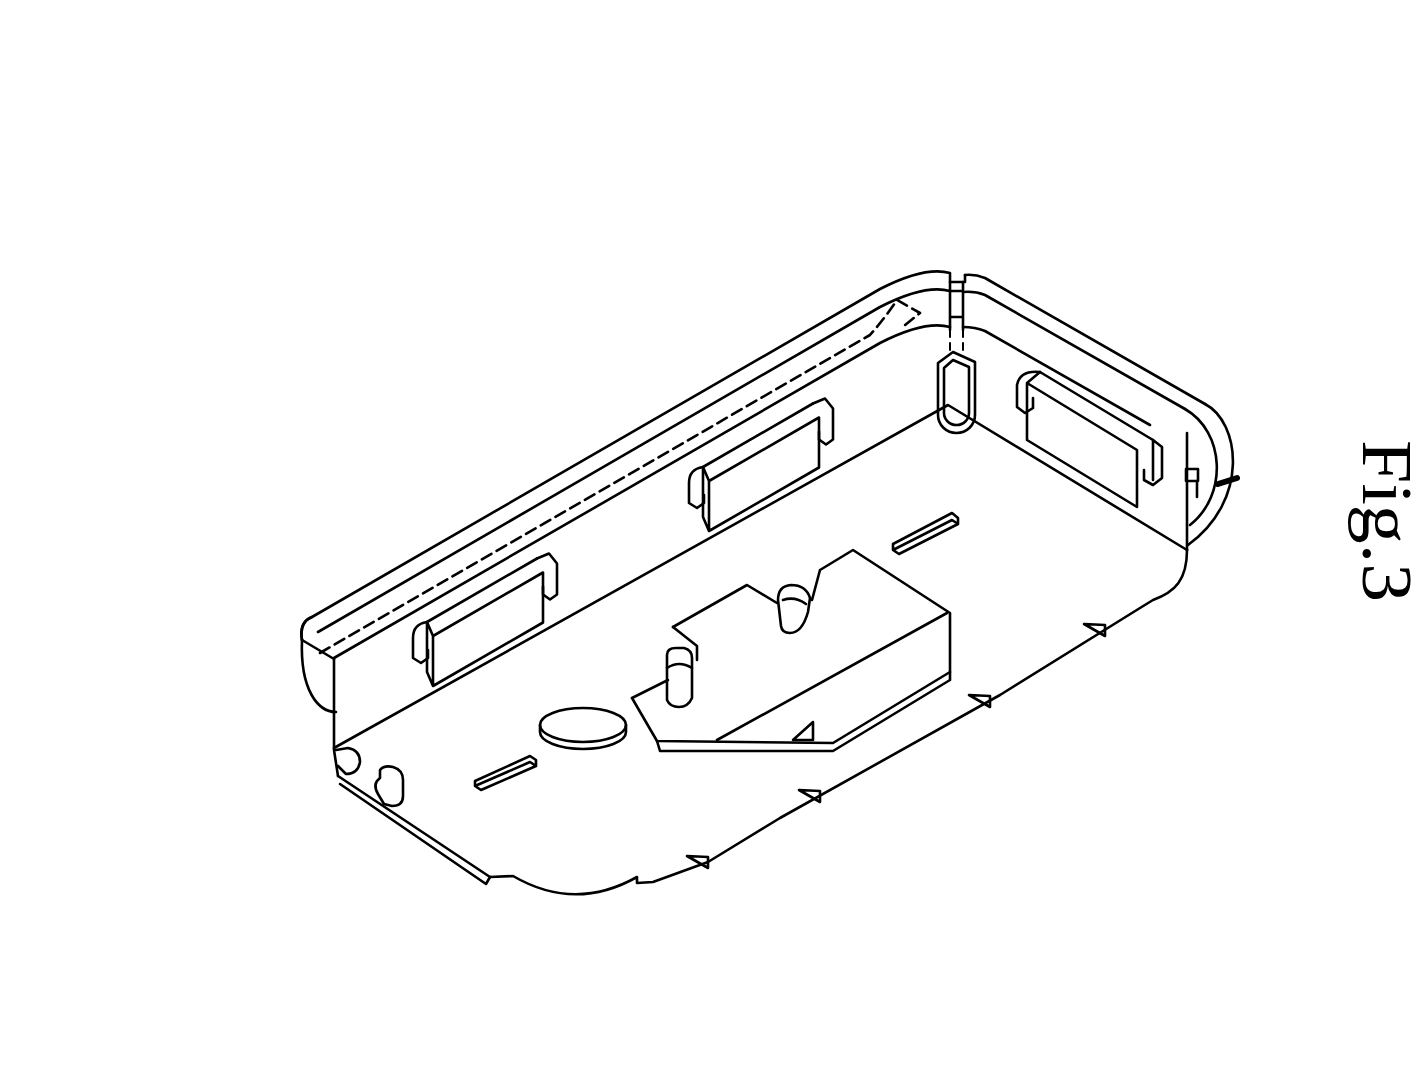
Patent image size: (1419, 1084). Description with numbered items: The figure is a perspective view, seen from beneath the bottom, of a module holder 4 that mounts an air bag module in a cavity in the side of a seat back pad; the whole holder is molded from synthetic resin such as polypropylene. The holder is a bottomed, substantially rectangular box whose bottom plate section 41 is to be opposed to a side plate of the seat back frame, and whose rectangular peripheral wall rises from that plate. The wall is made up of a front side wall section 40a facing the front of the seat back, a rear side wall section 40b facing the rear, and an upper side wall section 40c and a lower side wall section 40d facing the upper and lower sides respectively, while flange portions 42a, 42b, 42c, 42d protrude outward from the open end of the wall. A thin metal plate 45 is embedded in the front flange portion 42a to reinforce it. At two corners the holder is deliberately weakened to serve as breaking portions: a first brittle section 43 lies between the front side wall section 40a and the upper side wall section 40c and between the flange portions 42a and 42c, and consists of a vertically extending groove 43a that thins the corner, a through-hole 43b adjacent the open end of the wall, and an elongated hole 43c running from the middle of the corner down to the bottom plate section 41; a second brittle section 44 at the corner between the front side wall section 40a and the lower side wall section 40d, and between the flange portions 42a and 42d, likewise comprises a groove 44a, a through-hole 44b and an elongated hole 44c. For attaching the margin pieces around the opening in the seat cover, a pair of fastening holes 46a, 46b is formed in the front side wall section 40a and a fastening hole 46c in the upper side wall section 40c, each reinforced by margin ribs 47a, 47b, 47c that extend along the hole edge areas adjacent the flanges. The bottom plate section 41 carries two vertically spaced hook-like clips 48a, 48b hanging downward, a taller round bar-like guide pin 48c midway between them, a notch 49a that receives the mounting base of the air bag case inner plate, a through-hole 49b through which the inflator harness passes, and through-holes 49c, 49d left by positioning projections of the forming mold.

The module holder 4 is at (632, 432).
The front side wall section 40a is at (620, 517).
The rear side wall section 40b is at (913, 668).
The upper side wall section 40c is at (1200, 400).
The lower side wall section 40d is at (333, 763).
The bottom plate section 41 is at (1046, 620).
The flange portion 42a is at (813, 318).
The flange portion 42b is at (1197, 490).
The flange portion 42c is at (1141, 370).
The flange portion 42d is at (320, 687).
The first brittle section 43 is at (1093, 183).
The groove 43a is at (996, 290).
The through-hole 43b is at (948, 300).
The elongated hole 43c is at (960, 383).
The second brittle section 44 is at (193, 586).
The groove 44a is at (307, 622).
The through-hole 44b is at (330, 670).
The elongated hole 44c is at (330, 760).
The thin metal plate 45 is at (853, 310).
The fastening hole 46a is at (770, 470).
The fastening hole 46b is at (480, 630).
The fastening hole 46c is at (1050, 428).
The margin rib 47a is at (790, 405).
The margin rib 47b is at (480, 573).
The margin rib 47c is at (1113, 400).
The hook-like clip 48a is at (783, 620).
The hook-like clip 48b is at (383, 807).
The guide pin 48c is at (680, 693).
The notch 49a is at (870, 580).
The through-hole 49b is at (587, 723).
The through-hole 49c is at (917, 542).
The through-hole 49d is at (507, 777).